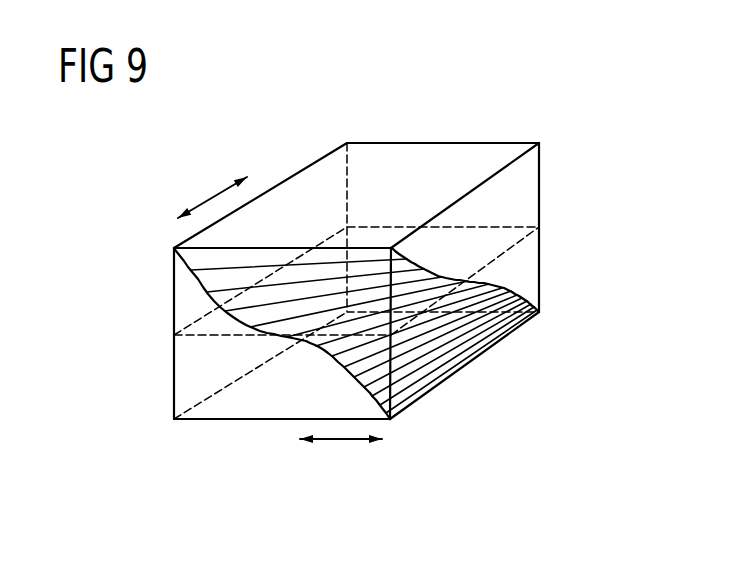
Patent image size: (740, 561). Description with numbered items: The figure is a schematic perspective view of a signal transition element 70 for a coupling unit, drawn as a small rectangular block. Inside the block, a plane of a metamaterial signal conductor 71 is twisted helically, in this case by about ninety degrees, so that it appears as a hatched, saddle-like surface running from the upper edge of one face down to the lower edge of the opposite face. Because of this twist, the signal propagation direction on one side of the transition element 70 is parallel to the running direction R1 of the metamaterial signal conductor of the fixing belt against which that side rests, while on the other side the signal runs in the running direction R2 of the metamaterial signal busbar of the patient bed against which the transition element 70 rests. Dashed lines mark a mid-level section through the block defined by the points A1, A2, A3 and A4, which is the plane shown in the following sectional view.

The signal transition element 70 is at (420, 143).
The metamaterial signal conductor 71 is at (510, 288).
The point A1 is at (174, 335).
The point A2 is at (392, 334).
The point A3 is at (540, 228).
The point A4 is at (347, 228).
The running direction R1 is at (208, 193).
The running direction R2 is at (342, 442).